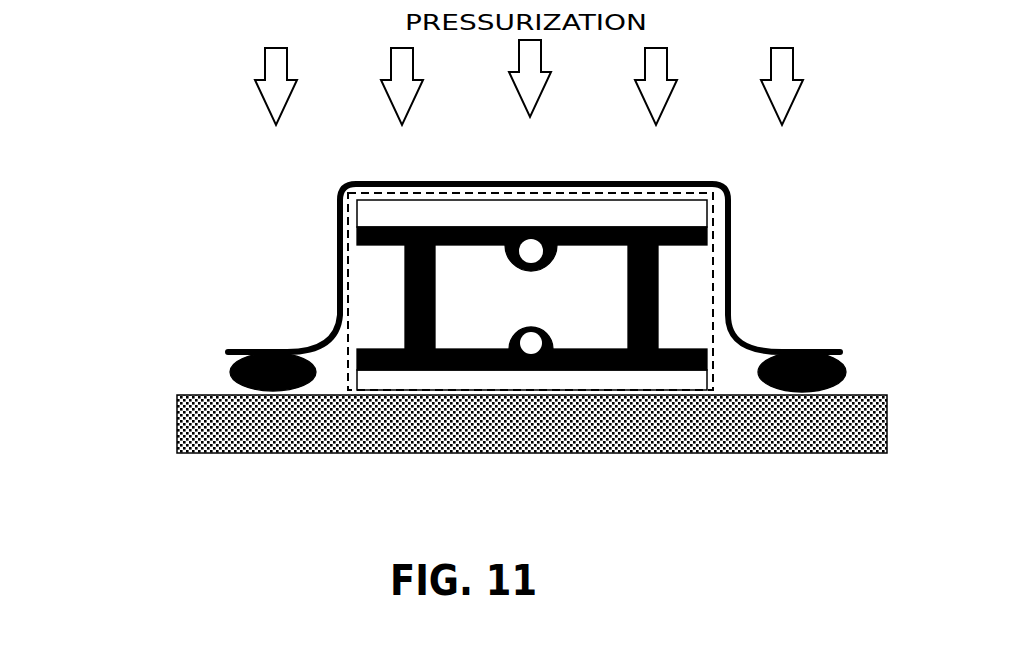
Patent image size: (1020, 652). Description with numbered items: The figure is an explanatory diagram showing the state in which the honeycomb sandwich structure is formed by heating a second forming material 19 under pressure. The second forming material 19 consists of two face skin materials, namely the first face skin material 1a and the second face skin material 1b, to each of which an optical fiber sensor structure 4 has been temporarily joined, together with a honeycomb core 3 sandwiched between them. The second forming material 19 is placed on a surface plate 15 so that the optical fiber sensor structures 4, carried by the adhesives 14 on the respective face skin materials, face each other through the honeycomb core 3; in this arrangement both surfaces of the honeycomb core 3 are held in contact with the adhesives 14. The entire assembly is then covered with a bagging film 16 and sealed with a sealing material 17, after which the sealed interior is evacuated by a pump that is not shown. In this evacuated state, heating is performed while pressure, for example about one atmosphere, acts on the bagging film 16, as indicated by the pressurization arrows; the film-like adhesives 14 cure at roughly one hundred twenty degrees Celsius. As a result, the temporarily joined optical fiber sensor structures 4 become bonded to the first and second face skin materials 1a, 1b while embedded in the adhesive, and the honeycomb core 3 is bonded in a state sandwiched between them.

The first face skin material 1a is at (670, 378).
The second face skin material 1b is at (575, 215).
The honeycomb core 3 is at (405, 300).
The optical fiber sensor structure 4 is at (532, 360).
The adhesive 14 is at (438, 227).
The surface plate 15 is at (190, 428).
The bagging film 16 is at (337, 218).
The sealing material 17 is at (237, 372).
The second forming material 19 is at (689, 193).